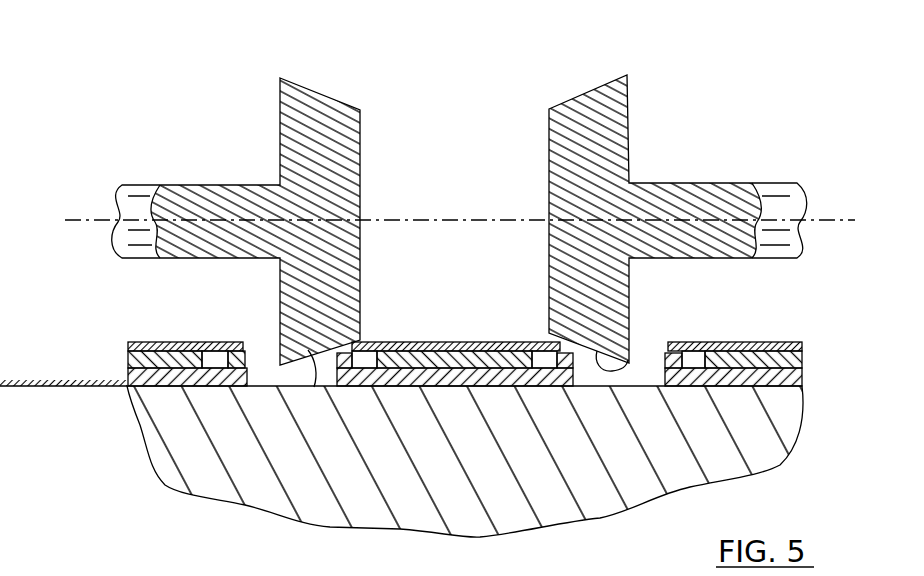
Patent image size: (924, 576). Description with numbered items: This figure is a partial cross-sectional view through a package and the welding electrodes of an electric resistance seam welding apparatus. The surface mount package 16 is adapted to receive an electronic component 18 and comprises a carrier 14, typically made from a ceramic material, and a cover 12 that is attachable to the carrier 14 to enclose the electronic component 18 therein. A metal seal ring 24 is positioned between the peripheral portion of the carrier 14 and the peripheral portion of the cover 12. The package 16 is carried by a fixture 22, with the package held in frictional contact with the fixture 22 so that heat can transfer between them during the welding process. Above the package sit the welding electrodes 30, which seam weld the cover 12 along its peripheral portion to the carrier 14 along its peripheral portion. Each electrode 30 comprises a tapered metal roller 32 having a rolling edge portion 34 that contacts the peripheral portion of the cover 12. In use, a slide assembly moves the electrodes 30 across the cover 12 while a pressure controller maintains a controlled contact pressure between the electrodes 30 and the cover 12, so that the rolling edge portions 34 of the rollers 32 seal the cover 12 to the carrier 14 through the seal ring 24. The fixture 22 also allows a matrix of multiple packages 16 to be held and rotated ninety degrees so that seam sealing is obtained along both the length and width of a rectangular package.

The cover 12 is at (163, 341).
The carrier 14 is at (127, 387).
The surface mount package 16 is at (591, 319).
The electronic component 18 is at (488, 358).
The fixture 22 is at (773, 412).
The metal seal ring 24 is at (547, 349).
The welding electrodes 30 is at (460, 188).
The tapered metal roller 32 is at (309, 86).
The rolling edge portion 34 is at (636, 356).